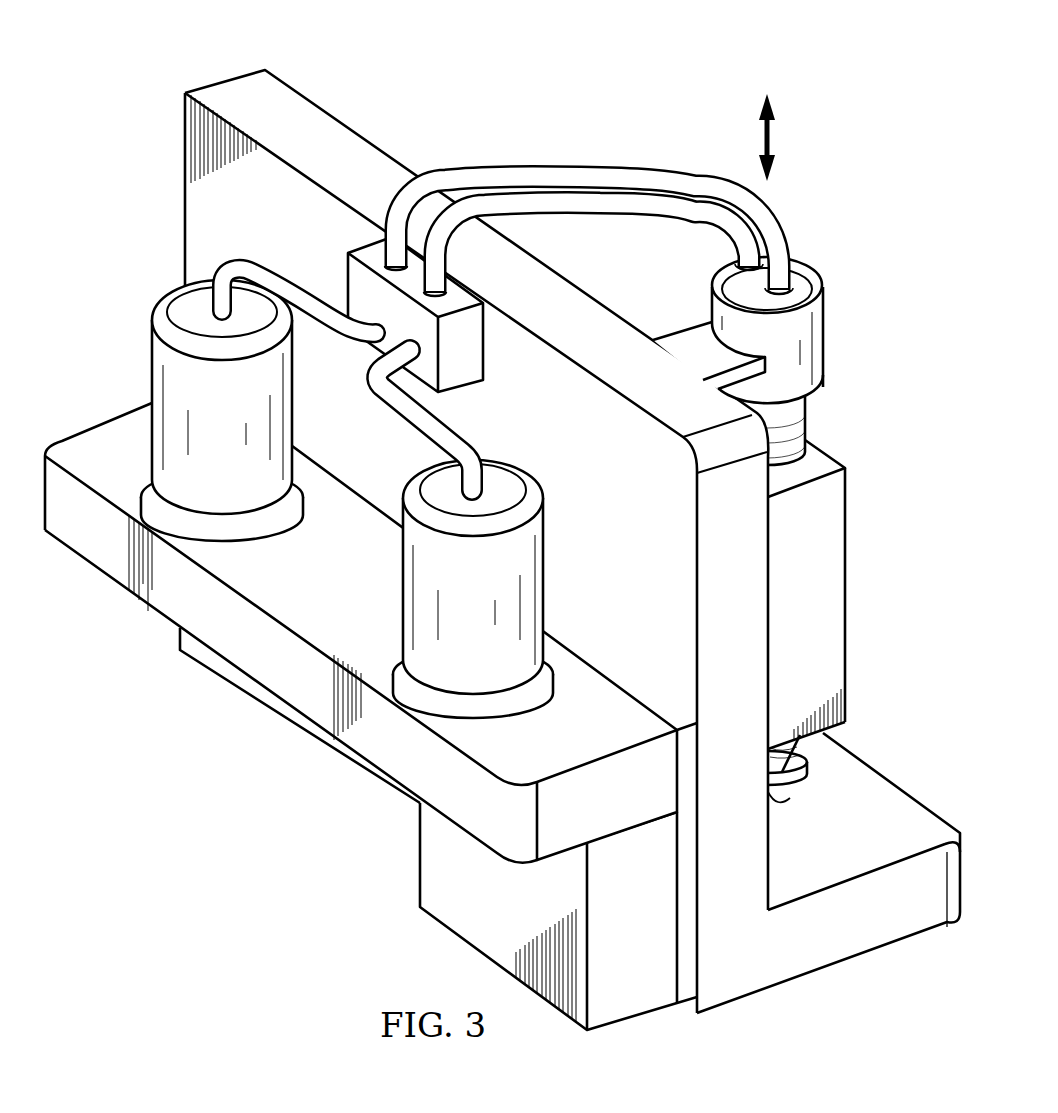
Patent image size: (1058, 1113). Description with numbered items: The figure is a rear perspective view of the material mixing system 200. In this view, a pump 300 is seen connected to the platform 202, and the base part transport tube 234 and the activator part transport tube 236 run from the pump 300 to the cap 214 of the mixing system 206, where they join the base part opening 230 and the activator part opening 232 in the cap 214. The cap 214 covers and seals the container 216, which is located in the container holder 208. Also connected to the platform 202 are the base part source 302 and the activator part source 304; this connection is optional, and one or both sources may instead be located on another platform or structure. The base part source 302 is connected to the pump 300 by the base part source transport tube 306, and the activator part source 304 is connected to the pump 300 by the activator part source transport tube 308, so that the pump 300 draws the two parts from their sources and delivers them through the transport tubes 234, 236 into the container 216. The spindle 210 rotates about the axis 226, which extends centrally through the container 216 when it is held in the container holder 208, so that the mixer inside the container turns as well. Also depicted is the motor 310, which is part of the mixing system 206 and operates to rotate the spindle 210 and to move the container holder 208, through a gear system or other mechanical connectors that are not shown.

The material mixing system 200 is at (596, 58).
The platform 202 is at (333, 127).
The mixing system 206 is at (906, 448).
The container holder 208 is at (846, 597).
The spindle 210 is at (781, 803).
The cap 214 is at (823, 341).
The container 216 is at (806, 432).
The axis 226 is at (772, 136).
The base part opening 230 is at (792, 284).
The activator part opening 232 is at (738, 263).
The base part transport tube 234 is at (612, 218).
The activator part transport tube 236 is at (637, 165).
The pump 300 is at (346, 275).
The base part source 302 is at (545, 563).
The activator part source 304 is at (150, 364).
The base part source transport tube 306 is at (406, 417).
The activator part source transport tube 308 is at (230, 265).
The motor 310 is at (632, 1020).